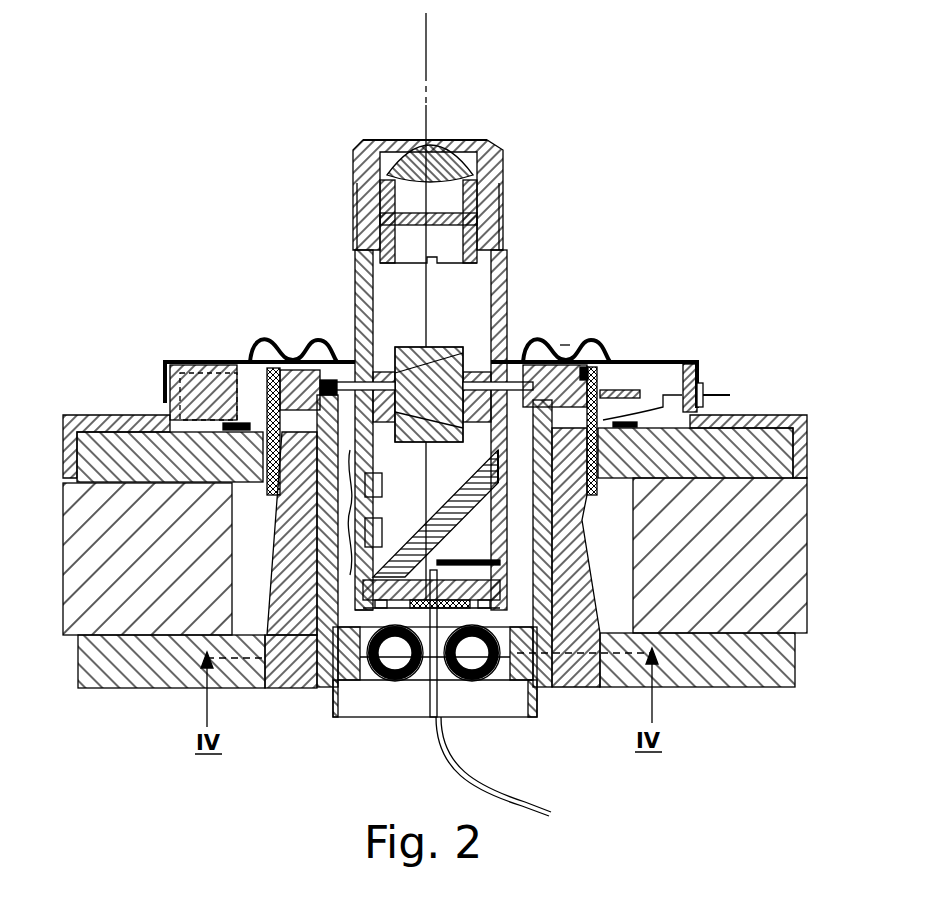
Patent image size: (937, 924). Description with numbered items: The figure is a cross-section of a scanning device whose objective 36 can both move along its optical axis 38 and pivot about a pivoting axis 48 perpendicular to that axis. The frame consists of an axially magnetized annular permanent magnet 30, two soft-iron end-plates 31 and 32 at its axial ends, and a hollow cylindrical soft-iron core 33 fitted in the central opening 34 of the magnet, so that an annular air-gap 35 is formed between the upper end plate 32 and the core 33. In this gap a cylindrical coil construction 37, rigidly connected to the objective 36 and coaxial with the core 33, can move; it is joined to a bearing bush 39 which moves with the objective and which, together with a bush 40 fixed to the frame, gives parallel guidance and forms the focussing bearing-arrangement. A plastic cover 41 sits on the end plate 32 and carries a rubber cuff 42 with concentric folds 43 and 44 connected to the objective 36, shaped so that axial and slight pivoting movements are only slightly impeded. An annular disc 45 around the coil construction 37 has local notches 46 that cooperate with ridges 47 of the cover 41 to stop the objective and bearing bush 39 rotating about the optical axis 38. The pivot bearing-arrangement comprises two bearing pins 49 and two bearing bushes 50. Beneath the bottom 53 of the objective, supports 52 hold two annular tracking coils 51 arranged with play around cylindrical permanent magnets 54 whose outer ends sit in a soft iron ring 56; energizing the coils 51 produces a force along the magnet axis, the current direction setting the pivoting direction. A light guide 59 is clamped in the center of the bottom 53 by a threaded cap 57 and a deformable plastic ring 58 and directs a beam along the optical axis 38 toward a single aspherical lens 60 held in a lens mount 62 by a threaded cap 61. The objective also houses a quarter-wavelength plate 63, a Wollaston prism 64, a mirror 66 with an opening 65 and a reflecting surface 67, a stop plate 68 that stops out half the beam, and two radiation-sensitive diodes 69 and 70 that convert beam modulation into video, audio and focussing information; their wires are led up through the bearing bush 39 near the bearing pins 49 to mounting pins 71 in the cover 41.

The annular permanent magnet 30 is at (197, 570).
The soft-iron end-plate 31 is at (128, 665).
The soft-iron end-plate 32 is at (133, 450).
The hollow cylindrical soft-iron core 33 is at (570, 572).
The central opening 34 is at (610, 526).
The annular air-gap 35 is at (283, 480).
The objective 36 is at (514, 250).
The coil construction 37 is at (272, 455).
The optical axis 38 is at (427, 36).
The bearing bush 39 is at (337, 690).
The bush 40 is at (320, 672).
The plastic cover 41 is at (72, 415).
The rubber cuff 42 is at (725, 414).
The concentric fold 43 is at (586, 366).
The concentric fold 44 is at (563, 343).
The annular disc 45 is at (686, 388).
The local notch 46 is at (248, 395).
The ridge 47 is at (200, 385).
The pivoting axis 48 is at (565, 340).
The bearing pin 49 is at (342, 382).
The bearing bush 50 is at (324, 380).
The tracking coil 51 is at (375, 675).
The support 52 is at (383, 618).
The bottom 53 is at (540, 590).
The cylindrical permanent magnet 54 is at (397, 662).
The soft iron ring 56 is at (345, 710).
The threaded cap 57 is at (510, 617).
The deformable plastic ring 58 is at (545, 560).
The light guide 59 is at (521, 812).
The aspherical lens 60 is at (406, 143).
The threaded cap 61 is at (492, 142).
The lens mount 62 is at (357, 253).
The quarter-wavelength plate 63 is at (440, 217).
The Wollaston prism 64 is at (446, 345).
The opening 65 is at (437, 560).
The mirror 66 is at (437, 513).
The reflecting surface 67 is at (497, 475).
The stop plate 68 is at (468, 562).
The radiation-sensitive diode 69 is at (400, 469).
The radiation-sensitive diode 70 is at (381, 536).
The mounting pin 71 is at (731, 395).